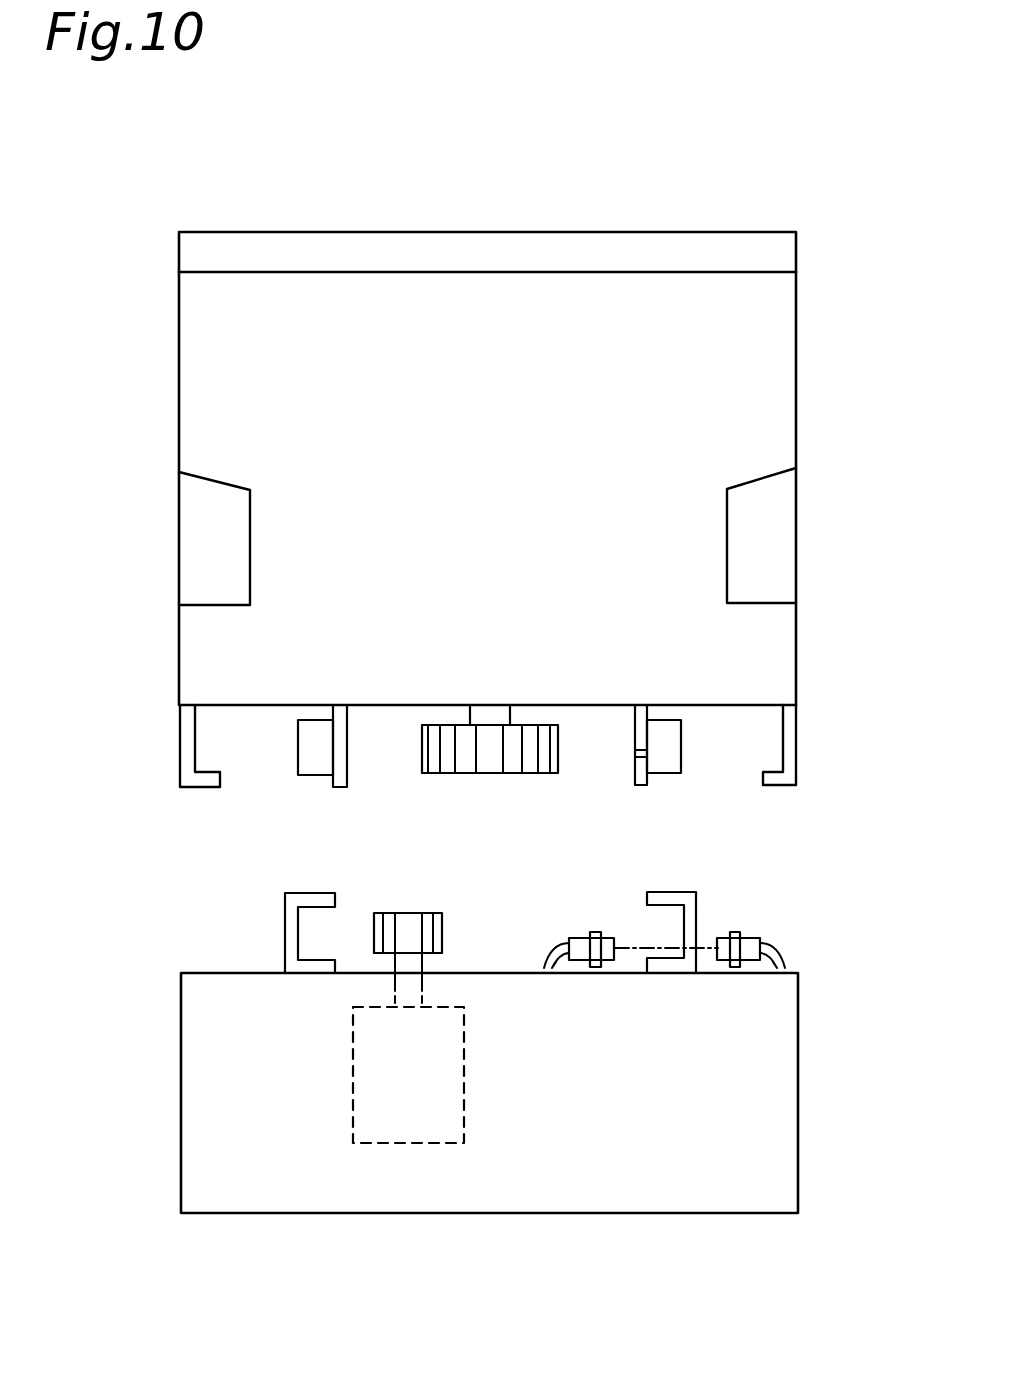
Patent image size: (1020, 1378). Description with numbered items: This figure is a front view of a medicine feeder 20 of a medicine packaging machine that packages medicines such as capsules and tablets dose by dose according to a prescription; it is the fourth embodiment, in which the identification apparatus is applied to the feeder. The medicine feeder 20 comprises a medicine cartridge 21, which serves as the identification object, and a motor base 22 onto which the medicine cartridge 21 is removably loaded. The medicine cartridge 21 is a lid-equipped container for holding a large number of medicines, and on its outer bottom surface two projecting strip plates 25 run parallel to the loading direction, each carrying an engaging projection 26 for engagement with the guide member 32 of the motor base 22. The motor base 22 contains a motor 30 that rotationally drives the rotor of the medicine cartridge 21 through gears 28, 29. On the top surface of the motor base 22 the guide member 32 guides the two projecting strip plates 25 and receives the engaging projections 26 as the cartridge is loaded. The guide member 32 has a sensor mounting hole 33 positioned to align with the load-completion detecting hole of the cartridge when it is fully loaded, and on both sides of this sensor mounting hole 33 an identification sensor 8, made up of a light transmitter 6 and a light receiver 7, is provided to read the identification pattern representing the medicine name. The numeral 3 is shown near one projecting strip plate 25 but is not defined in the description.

The optical fiber 3 is at (634, 753).
The light transmitter 6 is at (586, 935).
The light receiver 7 is at (758, 920).
The identification sensor 8 is at (796, 952).
The medicine feeder 20 is at (141, 265).
The medicine cartridge 21 is at (796, 352).
The motor base 22 is at (798, 1058).
The projecting strip plate 25 is at (347, 744).
The engaging projection 26 is at (298, 746).
The gear 28 is at (488, 775).
The gear 29 is at (410, 912).
The motor 30 is at (464, 1068).
The guide member 32 is at (300, 892).
The sensor mounting hole 33 is at (700, 922).